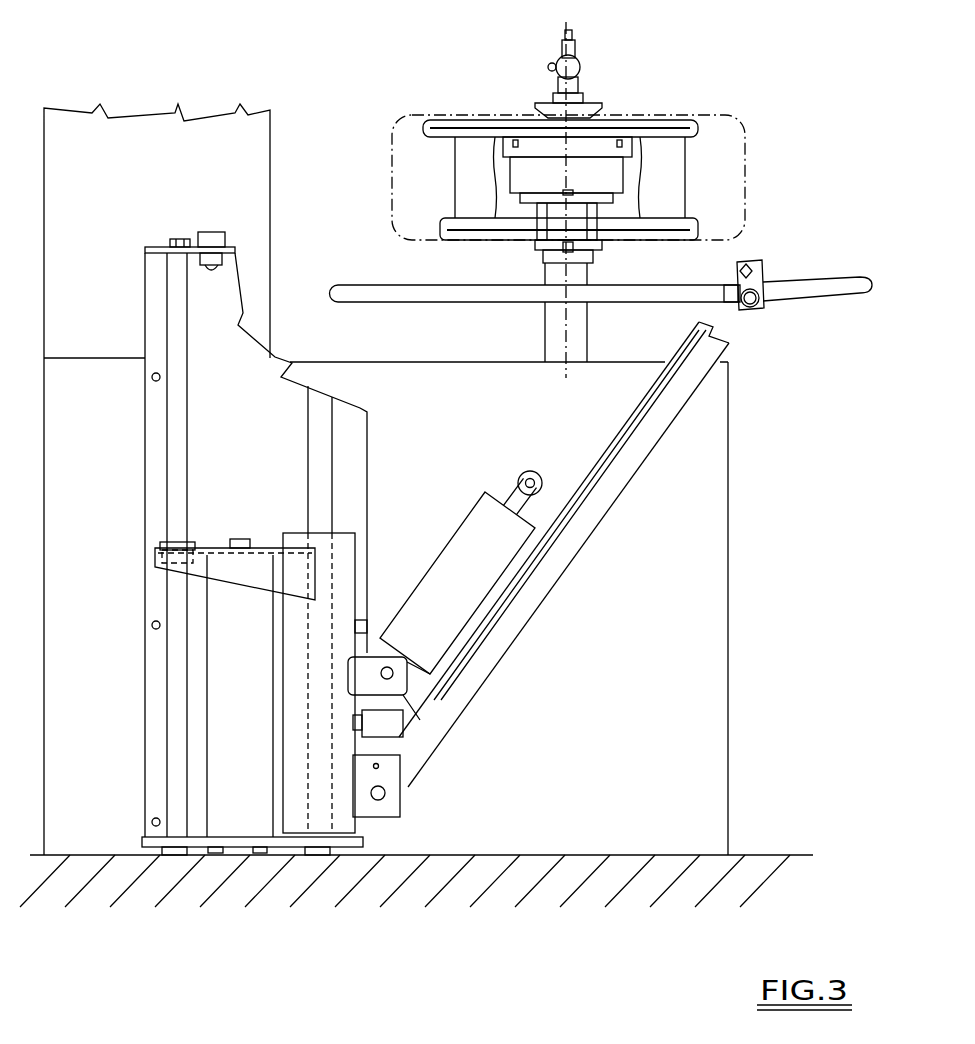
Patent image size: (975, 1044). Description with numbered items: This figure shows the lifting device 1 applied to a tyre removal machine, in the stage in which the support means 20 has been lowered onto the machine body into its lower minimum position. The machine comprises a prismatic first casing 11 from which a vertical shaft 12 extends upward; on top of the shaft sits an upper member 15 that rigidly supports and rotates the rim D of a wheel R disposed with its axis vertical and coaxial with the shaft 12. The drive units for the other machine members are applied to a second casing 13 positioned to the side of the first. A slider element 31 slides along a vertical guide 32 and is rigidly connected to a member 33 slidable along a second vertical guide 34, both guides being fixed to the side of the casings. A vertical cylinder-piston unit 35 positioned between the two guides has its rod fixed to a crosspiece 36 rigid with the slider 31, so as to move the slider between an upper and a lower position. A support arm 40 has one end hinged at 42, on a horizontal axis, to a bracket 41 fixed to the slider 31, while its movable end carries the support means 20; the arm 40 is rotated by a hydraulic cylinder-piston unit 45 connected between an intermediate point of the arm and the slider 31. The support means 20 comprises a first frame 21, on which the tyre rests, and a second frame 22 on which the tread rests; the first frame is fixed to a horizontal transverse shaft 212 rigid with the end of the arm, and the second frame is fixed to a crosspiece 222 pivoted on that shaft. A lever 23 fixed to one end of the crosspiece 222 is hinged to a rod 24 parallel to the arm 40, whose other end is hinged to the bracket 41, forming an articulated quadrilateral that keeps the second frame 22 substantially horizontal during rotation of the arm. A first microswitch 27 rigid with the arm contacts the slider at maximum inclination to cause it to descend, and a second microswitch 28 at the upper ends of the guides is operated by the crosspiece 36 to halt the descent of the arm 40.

The lifting device 1 is at (538, 581).
The first casing 11 is at (725, 613).
The vertical shaft 12 is at (545, 330).
The second casing 13 is at (115, 95).
The upper member 15 is at (647, 172).
The support means 20 is at (744, 319).
The first frame 21 is at (370, 287).
The second frame 22 is at (838, 270).
The lever 23 is at (718, 283).
The rod 24 is at (600, 456).
The first microswitch 27 is at (383, 720).
The second microswitch 28 is at (210, 232).
The slider element 31 is at (347, 563).
The vertical guide 32 is at (312, 435).
The member 33 is at (157, 536).
The second vertical guide 34 is at (170, 463).
The vertical cylinder-piston unit 35 is at (213, 718).
The crosspiece 36 is at (268, 547).
The support arm 40 is at (547, 596).
The bracket 41 is at (402, 795).
The hinge 42 is at (383, 798).
The hydraulic cylinder-piston unit 45 is at (472, 515).
The horizontal transverse shaft 212 is at (763, 309).
The crosspiece 222 is at (765, 280).
The wheel R is at (403, 117).
The rim D is at (436, 178).